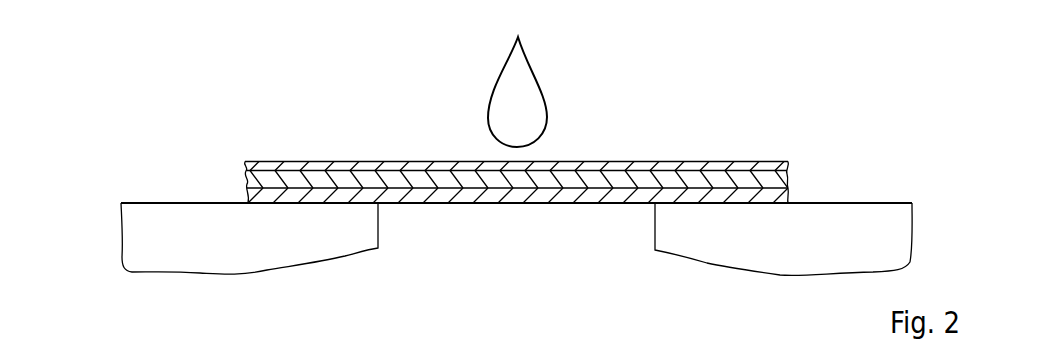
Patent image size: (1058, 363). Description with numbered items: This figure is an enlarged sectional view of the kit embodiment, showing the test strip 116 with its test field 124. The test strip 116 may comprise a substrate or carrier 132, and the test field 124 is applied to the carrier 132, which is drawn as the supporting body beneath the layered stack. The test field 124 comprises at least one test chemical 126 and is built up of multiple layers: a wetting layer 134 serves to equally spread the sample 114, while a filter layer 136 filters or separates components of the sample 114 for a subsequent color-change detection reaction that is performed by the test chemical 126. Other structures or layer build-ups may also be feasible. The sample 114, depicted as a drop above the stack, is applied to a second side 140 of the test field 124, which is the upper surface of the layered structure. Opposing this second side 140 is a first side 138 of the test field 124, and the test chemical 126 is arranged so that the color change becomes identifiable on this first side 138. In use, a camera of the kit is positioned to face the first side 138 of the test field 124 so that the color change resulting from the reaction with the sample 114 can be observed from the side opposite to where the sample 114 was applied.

The sample 114 is at (525, 88).
The test strip 116 is at (710, 100).
The test field 124 is at (409, 133).
The test chemical 126 is at (527, 197).
The carrier 132 is at (138, 240).
The wetting layer 134 is at (445, 161).
The filter layer 136 is at (460, 175).
The first side 138 is at (605, 203).
The second side 140 is at (598, 161).